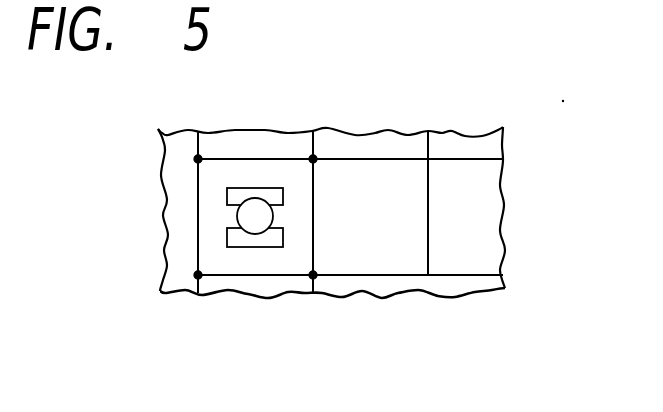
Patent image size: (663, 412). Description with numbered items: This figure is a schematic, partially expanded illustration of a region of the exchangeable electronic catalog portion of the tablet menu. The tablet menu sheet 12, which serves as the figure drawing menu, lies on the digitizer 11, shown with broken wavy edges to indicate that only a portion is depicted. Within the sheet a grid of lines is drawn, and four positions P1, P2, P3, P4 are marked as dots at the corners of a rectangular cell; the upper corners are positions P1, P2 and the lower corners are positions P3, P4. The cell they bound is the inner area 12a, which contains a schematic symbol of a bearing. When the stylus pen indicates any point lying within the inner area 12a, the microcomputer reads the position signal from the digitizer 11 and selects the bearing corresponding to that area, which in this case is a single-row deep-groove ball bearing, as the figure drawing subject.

The digitizer 11 is at (456, 140).
The tablet menu sheet 12 is at (392, 175).
The inner area 12a is at (210, 220).
The position P1 is at (208, 153).
The position P2 is at (323, 153).
The position P3 is at (205, 282).
The position P4 is at (320, 282).